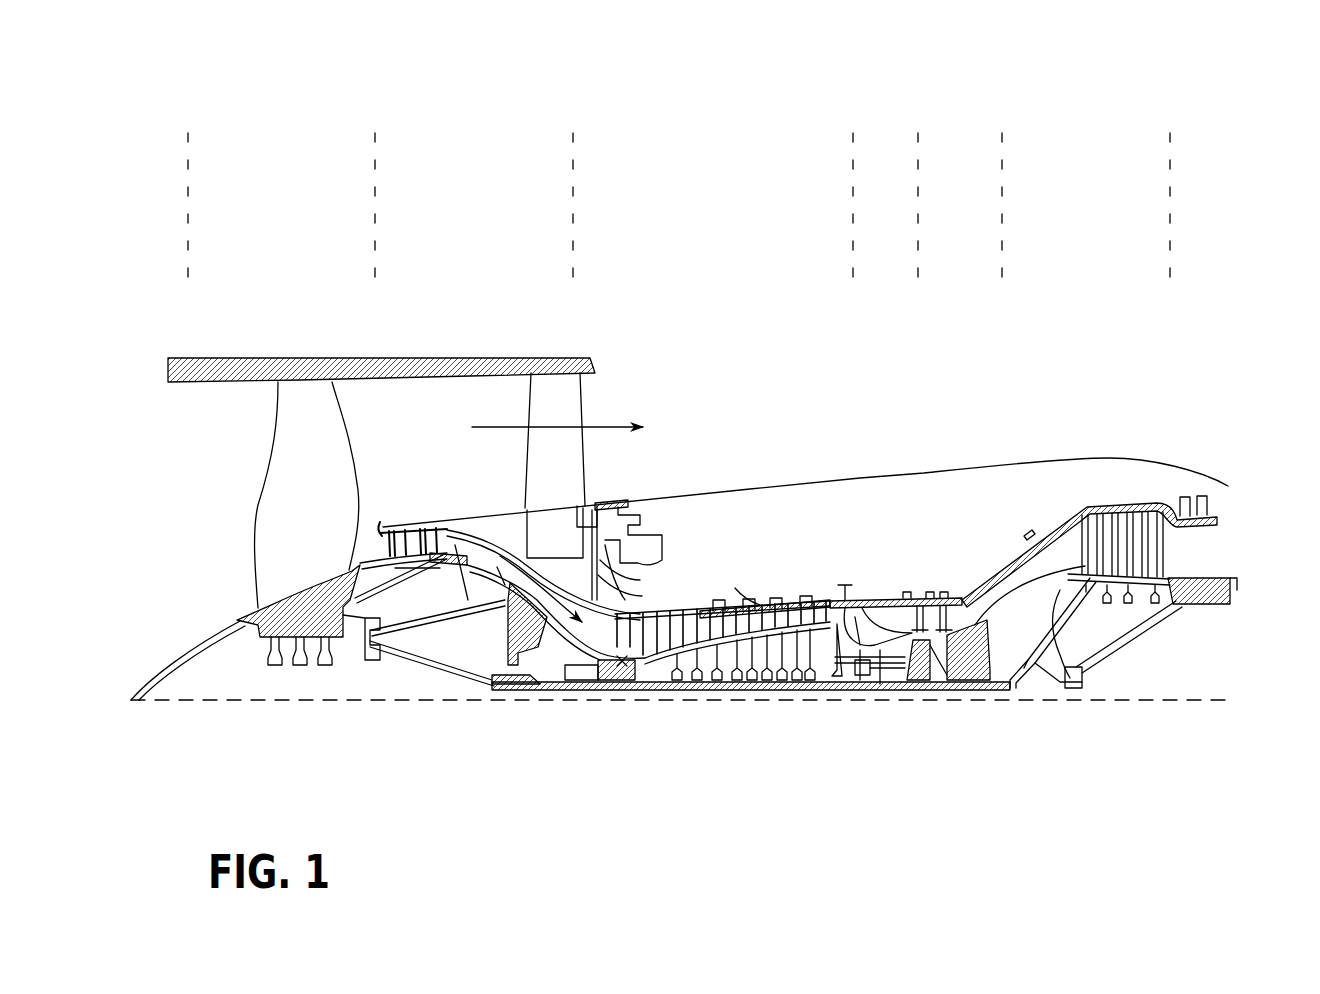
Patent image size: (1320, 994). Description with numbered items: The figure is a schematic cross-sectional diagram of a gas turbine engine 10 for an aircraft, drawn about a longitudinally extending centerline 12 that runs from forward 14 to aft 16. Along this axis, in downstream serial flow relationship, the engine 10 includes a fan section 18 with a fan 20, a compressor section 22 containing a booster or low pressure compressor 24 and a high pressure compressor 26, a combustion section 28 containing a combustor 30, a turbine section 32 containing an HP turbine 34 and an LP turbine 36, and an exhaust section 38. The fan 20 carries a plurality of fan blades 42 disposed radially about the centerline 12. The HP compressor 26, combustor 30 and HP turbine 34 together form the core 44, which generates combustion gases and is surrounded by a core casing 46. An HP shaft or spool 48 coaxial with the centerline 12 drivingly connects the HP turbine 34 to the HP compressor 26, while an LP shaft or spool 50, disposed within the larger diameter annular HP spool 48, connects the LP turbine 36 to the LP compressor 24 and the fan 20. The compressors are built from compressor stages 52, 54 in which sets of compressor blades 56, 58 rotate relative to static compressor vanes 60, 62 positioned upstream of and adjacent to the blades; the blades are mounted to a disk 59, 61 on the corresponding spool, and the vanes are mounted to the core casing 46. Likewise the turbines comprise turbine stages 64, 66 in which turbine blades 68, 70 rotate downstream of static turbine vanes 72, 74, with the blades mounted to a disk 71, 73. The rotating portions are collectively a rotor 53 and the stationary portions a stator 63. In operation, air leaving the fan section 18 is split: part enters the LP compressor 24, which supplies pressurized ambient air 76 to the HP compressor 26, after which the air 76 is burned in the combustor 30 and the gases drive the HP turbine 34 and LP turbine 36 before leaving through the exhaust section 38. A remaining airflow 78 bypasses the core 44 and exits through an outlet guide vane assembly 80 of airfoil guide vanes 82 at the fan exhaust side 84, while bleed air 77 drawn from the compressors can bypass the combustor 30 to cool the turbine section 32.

The gas turbine engine 10 is at (876, 356).
The centerline 12 is at (283, 704).
The forward 14 is at (140, 483).
The aft 16 is at (1252, 562).
The fan section 18 is at (373, 205).
The fan 20 is at (222, 553).
The compressor section 22 is at (853, 125).
The low pressure compressor 24 is at (571, 205).
The high pressure compressor 26 is at (851, 205).
The combustion section 28 is at (855, 205).
The combustor 30 is at (886, 608).
The turbine section 32 is at (1170, 125).
The HP turbine 34 is at (920, 205).
The LP turbine 36 is at (1168, 205).
The exhaust section 38 is at (1245, 521).
The fan blades 42 is at (333, 433).
The core 44 is at (836, 517).
The core casing 46 is at (1050, 528).
The HP shaft or spool 48 is at (862, 668).
The LP shaft or spool 50 is at (512, 692).
The compressor stages 52 is at (413, 501).
The rotor 53 is at (467, 574).
The compressor stages 54 is at (728, 596).
The compressor blades 56 is at (418, 515).
The compressor blades 58 is at (643, 602).
The disk 59 is at (395, 566).
The static compressor vanes 60 is at (388, 527).
The disk 61 is at (640, 672).
The static compressor vanes 62 is at (625, 598).
The stator 63 is at (1107, 497).
The turbine stages 64 is at (948, 584).
The turbine stages 66 is at (1150, 501).
The turbine blades 68 is at (951, 584).
The turbine blades 70 is at (1155, 520).
The disk 71 is at (932, 660).
The static turbine vanes 72 is at (917, 603).
The disk 73 is at (1080, 567).
The static turbine vanes 74 is at (1140, 520).
The pressurized ambient air 76 is at (593, 590).
The bleed air 77 is at (735, 588).
The airflow 78 is at (493, 421).
The outlet guide vane assembly 80 is at (598, 475).
The airfoil guide vanes 82 is at (540, 462).
The fan exhaust side 84 is at (623, 387).